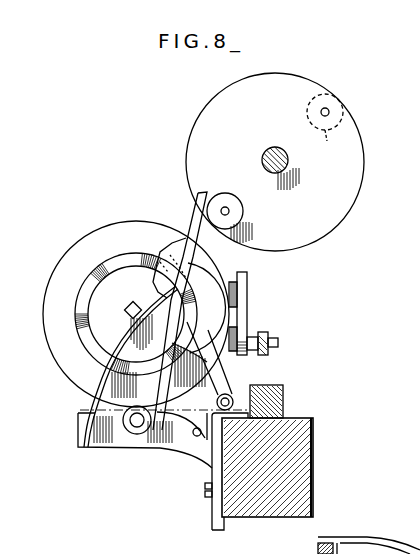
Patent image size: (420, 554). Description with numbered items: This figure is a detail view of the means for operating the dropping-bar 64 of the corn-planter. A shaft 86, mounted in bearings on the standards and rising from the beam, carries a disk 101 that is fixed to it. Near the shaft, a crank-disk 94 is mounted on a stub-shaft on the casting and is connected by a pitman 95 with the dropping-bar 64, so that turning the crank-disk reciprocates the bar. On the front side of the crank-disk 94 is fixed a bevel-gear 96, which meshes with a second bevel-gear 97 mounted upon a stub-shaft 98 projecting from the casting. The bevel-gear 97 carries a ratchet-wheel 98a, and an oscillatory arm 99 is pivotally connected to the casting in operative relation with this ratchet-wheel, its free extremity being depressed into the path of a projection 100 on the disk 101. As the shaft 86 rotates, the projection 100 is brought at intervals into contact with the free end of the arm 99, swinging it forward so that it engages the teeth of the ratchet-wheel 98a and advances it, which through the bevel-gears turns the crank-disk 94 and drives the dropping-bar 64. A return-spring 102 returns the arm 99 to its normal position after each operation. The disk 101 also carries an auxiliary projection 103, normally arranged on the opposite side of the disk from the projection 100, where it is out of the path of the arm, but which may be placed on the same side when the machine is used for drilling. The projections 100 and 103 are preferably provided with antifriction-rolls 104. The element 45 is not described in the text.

The frame body 45 is at (313, 446).
The dropping-bar 64 is at (284, 393).
The shaft 86 is at (278, 149).
The crank-disk 94 is at (252, 313).
The pitman 95 is at (268, 351).
The bevel-gear 96 is at (234, 280).
The bevel-gear 97 is at (73, 249).
The stub-shaft 98 is at (128, 308).
The ratchet-wheel 98a is at (126, 254).
The oscillatory arm 99 is at (199, 241).
The projection 100 is at (230, 211).
The disk 101 is at (275, 162).
The return-spring 102 is at (108, 364).
The auxiliary projection 103 is at (331, 110).
The antifriction-rolls 104 is at (293, 161).